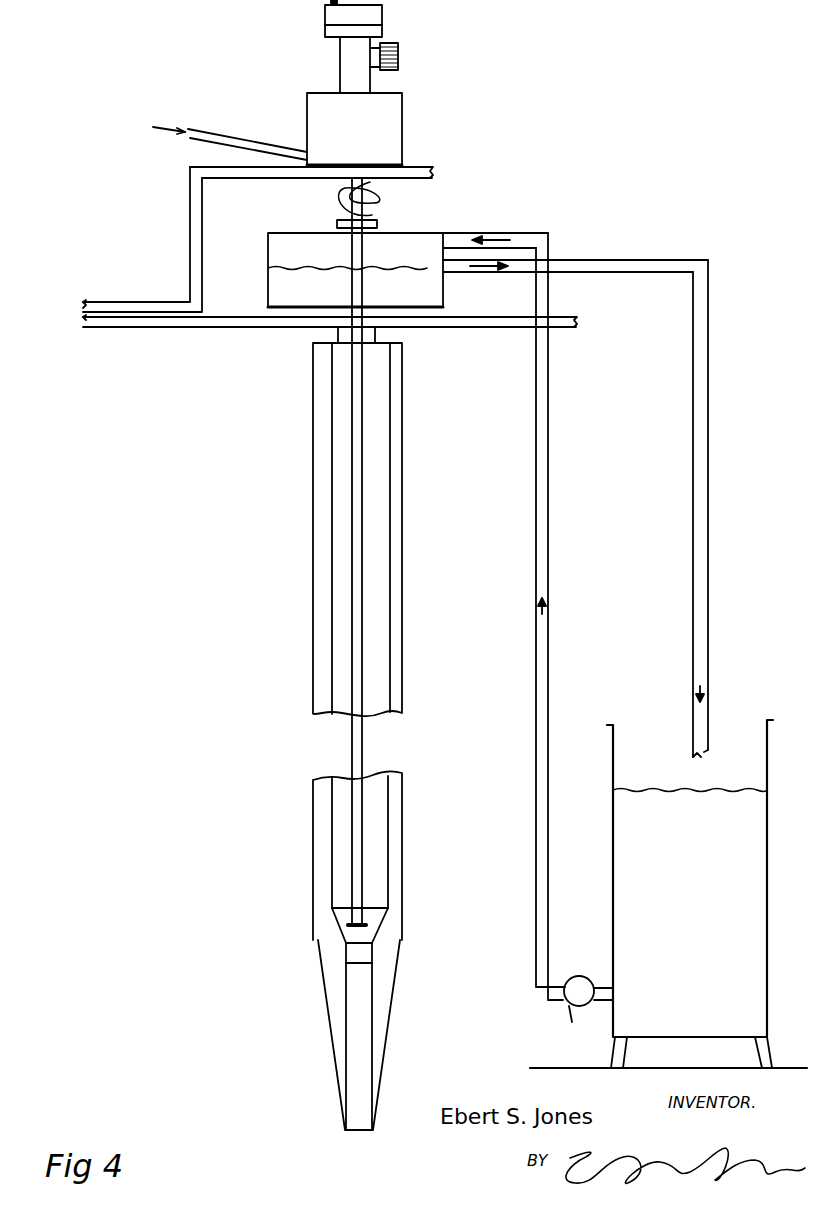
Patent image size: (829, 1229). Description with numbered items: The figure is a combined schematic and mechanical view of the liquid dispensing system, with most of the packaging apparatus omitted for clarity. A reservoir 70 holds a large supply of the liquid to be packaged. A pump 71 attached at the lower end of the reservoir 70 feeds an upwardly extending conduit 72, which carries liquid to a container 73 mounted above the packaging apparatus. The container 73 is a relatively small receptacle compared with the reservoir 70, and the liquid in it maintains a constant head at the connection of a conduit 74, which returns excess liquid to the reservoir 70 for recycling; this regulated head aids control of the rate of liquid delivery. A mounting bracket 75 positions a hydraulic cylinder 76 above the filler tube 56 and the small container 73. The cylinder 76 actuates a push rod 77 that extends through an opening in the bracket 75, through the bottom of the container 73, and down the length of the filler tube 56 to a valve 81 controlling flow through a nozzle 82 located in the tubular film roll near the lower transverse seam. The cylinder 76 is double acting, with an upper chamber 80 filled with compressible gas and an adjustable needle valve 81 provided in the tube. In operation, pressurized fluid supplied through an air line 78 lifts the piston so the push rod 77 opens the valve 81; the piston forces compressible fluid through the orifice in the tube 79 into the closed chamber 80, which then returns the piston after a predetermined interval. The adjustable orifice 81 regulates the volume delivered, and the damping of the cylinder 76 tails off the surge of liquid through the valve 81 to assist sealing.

The filler tube 56 is at (402, 435).
The reservoir 70 is at (613, 860).
The pump 71 is at (586, 978).
The conduit 72 is at (540, 933).
The container 73 is at (423, 240).
The conduit 74 is at (522, 273).
The mounting bracket 75 is at (190, 250).
The hydraulic cylinder 76 is at (390, 131).
The push rod 77 is at (358, 398).
The air line 78 is at (220, 130).
The tube 79 is at (338, 52).
The upper chamber 80 is at (384, 15).
The adjustable needle valve 81 is at (400, 58).
The nozzle 82 is at (333, 1045).